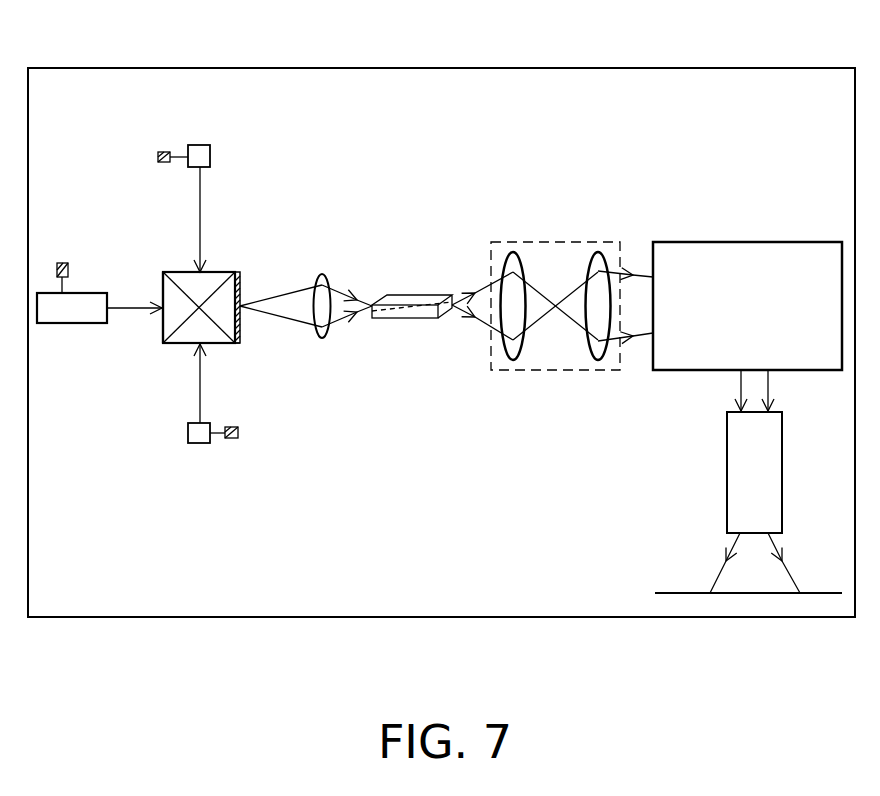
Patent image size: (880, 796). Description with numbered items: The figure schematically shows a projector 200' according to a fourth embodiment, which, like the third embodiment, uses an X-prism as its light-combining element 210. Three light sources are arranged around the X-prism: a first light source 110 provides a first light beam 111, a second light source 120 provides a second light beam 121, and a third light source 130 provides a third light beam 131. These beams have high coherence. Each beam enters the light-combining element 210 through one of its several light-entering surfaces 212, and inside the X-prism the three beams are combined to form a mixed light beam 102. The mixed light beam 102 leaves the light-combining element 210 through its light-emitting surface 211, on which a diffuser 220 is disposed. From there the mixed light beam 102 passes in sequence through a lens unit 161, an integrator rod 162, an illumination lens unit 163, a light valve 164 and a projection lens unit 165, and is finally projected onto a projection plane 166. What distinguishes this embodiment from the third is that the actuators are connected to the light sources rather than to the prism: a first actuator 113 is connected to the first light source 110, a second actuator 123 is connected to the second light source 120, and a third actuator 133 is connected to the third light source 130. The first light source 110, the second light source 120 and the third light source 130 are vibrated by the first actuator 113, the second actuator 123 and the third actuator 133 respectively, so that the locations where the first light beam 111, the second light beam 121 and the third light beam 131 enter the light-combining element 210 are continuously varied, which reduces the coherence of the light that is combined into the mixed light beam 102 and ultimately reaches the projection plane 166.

The projector 200' is at (60, 26).
The first light source 110 is at (57, 332).
The first light beam 111 is at (135, 302).
The first actuator 113 is at (62, 262).
The second light source 120 is at (199, 144).
The second light beam 121 is at (201, 206).
The second actuator 123 is at (157, 157).
The third light source 130 is at (200, 446).
The third light beam 131 is at (203, 408).
The third actuator 133 is at (241, 433).
The mixed light beam 102 is at (300, 290).
The lens unit 161 is at (320, 347).
The integrator rod 162 is at (420, 295).
The illumination lens unit 163 is at (555, 241).
The light valve 164 is at (748, 242).
The projection lens unit 165 is at (726, 471).
The projection plane 166 is at (680, 592).
The light-combining element 210 is at (213, 334).
The light-emitting surface 211 is at (242, 320).
The light-entering surfaces 212 is at (184, 271).
The diffuser 220 is at (238, 290).